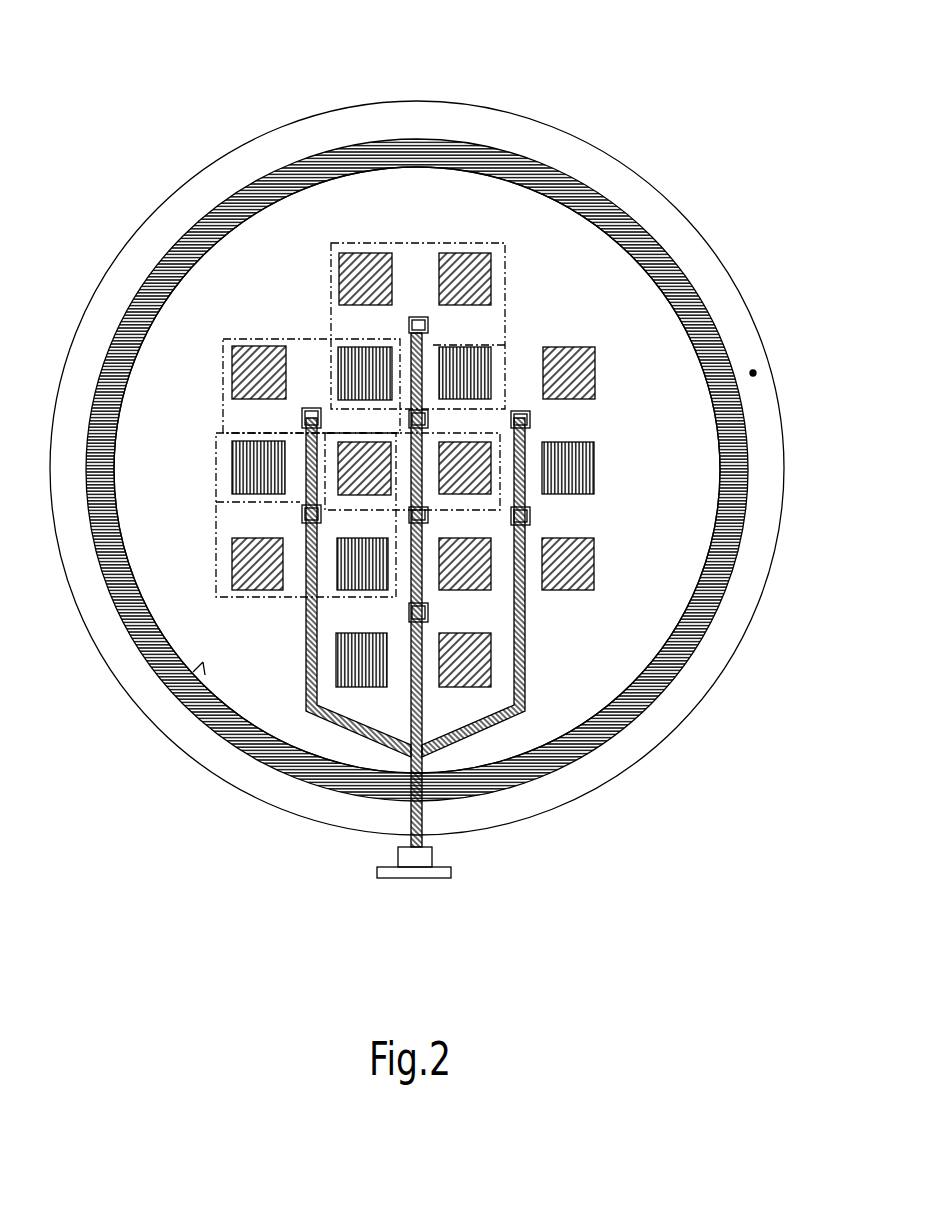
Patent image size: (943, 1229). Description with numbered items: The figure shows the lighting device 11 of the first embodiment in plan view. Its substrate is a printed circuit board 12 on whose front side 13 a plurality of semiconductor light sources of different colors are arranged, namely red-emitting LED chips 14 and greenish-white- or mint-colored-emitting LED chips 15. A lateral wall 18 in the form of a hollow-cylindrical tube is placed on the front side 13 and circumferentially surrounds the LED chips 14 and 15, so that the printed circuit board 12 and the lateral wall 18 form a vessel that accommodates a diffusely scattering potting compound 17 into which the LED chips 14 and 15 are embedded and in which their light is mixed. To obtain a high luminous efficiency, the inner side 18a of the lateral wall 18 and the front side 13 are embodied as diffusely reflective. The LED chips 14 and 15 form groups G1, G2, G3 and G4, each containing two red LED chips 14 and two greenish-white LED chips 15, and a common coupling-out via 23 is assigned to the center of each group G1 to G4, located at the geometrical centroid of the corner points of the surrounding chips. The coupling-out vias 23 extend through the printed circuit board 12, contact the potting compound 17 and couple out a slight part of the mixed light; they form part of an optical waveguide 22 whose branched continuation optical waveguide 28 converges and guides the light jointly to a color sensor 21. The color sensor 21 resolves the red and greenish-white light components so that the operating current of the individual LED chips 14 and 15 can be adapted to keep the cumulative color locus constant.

The lighting device 11 is at (672, 128).
The printed circuit board 12 is at (732, 327).
The front side 13 is at (756, 372).
The red-emitting LED chip 14 is at (364, 253).
The greenish-white- or mint-colored-emitting LED chip 15 is at (418, 317).
The potting compound 17 is at (635, 297).
The lateral wall 18 is at (237, 747).
The inner side 18a is at (203, 662).
The color sensor 21 is at (432, 856).
The optical waveguide 22 is at (490, 728).
The continuation optical waveguide 28 is at (418, 582).
The coupling-out via 23 is at (530, 517).
The group of LED chips G1 is at (486, 243).
The group of LED chips G2 is at (253, 339).
The group of LED chips G3 is at (213, 522).
The group of LED chips G4 is at (500, 447).